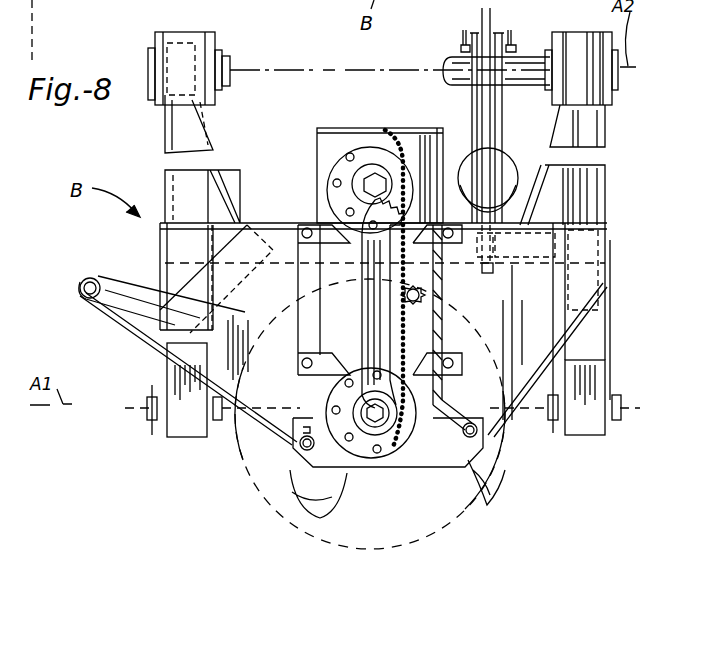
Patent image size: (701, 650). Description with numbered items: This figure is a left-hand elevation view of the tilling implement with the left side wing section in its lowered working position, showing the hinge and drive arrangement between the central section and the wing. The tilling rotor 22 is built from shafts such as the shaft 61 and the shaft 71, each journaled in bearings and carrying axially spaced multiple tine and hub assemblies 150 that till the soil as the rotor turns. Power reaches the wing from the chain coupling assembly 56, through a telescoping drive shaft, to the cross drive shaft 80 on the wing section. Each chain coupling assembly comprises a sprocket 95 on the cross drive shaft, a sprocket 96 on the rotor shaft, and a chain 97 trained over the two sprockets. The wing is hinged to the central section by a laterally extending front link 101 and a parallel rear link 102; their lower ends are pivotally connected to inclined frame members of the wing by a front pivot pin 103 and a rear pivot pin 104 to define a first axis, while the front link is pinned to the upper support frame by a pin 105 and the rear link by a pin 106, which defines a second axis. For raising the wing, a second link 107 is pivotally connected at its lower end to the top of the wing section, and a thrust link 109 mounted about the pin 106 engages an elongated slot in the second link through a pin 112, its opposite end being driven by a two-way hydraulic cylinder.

The tilling rotor 22 is at (398, 468).
The chain coupling assembly 56 is at (392, 128).
The shaft 61 is at (362, 410).
The shaft 71 is at (67, 10).
The cross drive shaft 80 is at (370, 185).
The sprocket 95 is at (474, 160).
The sprocket 96 is at (405, 442).
The chain 97 is at (407, 318).
The front link 101 is at (158, 337).
The rear link 102 is at (598, 284).
The front pivot pin 103 is at (150, 405).
The rear pivot pin 104 is at (612, 425).
The pin 105 is at (152, 80).
The pin 106 is at (620, 67).
The second link 107 is at (489, 140).
The thrust link 109 is at (511, 114).
The pin 112 is at (460, 45).
The multiple tine and hub assembly 150 is at (283, 512).